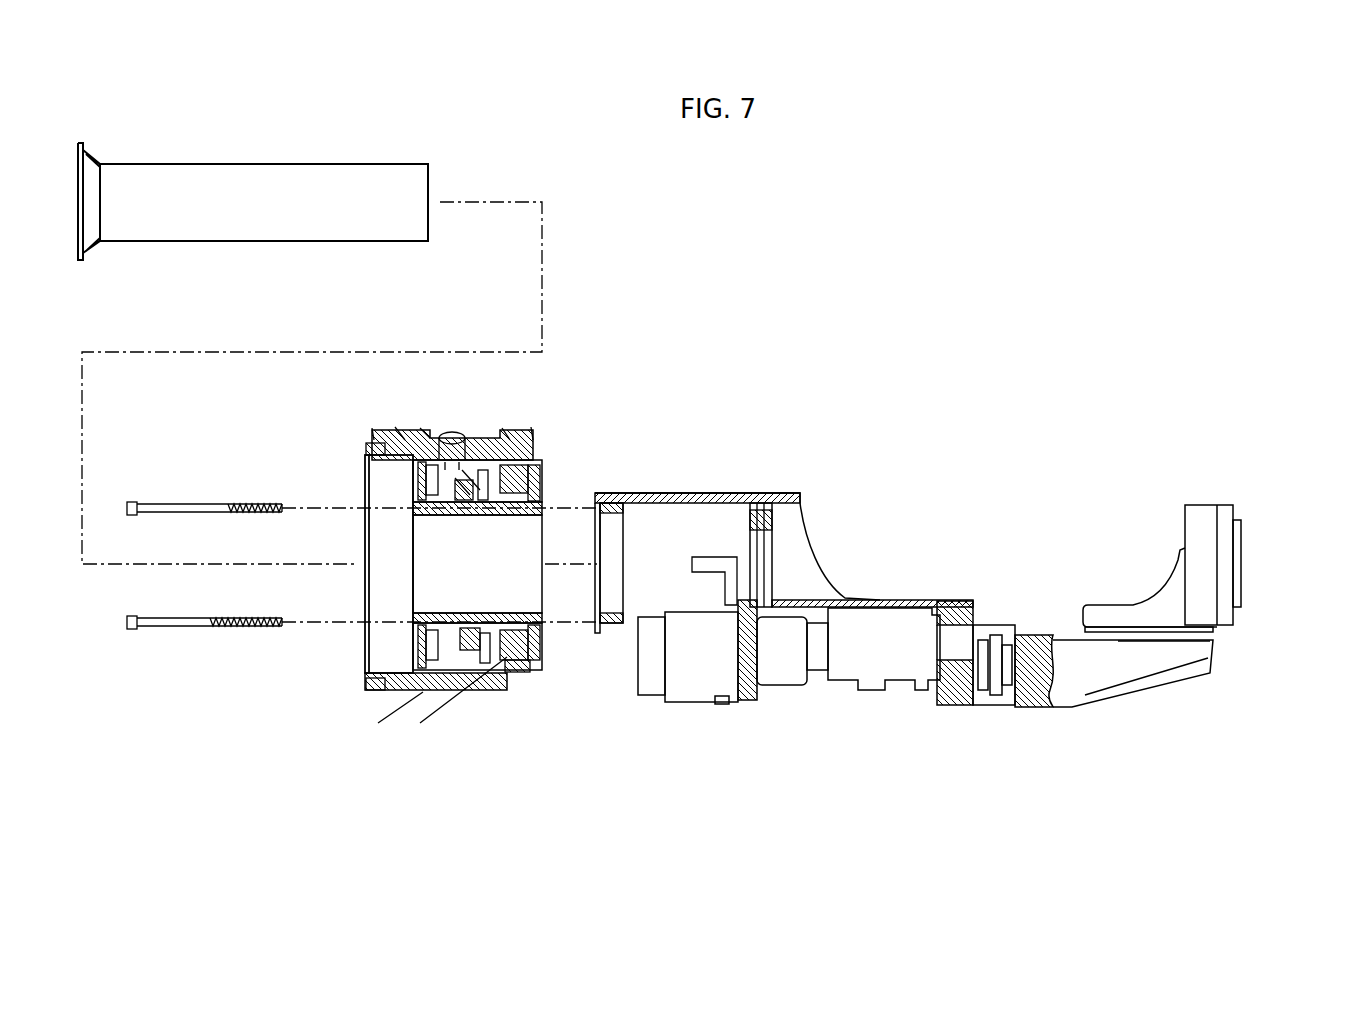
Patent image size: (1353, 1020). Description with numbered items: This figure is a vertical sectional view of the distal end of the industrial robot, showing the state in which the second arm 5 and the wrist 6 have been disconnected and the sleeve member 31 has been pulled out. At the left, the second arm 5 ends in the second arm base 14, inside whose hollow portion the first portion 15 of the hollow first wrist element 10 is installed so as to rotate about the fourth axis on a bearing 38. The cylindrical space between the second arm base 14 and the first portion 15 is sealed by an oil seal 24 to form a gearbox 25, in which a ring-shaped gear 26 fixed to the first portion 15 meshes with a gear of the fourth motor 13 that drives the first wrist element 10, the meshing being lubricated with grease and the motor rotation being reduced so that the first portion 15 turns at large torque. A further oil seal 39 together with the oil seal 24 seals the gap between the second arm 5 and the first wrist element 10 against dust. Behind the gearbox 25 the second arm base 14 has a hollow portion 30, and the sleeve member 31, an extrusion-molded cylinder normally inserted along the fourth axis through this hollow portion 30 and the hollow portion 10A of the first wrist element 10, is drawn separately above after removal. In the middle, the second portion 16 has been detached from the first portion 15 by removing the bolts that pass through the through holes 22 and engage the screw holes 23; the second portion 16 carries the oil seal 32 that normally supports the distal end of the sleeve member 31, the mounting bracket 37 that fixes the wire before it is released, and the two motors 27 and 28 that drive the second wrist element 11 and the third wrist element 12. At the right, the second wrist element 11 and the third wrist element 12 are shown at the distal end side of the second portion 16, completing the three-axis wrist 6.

The second arm 5 is at (378, 690).
The wrist 6 is at (1198, 700).
The first wrist element 10 is at (765, 493).
The hollow portion 10A is at (662, 525).
The second wrist element 11 is at (1113, 603).
The third wrist element 12 is at (1242, 563).
The fourth motor 13 is at (478, 440).
The second arm base 14 is at (390, 692).
The first portion 15 is at (492, 516).
The second portion 16 is at (718, 494).
The through holes 22 is at (398, 522).
The screw holes 23 is at (623, 507).
The oil seal 24 is at (541, 490).
The gearbox 25 is at (452, 660).
The ring-shaped gear 26 is at (482, 662).
The motor 27 is at (698, 690).
The motor 28 is at (897, 682).
The hollow portion 30 is at (388, 494).
The sleeve member 31 is at (271, 163).
The oil seal 32 is at (773, 525).
The mounting bracket 37 is at (738, 568).
The bearing 38 is at (520, 667).
The oil seal 39 is at (410, 477).